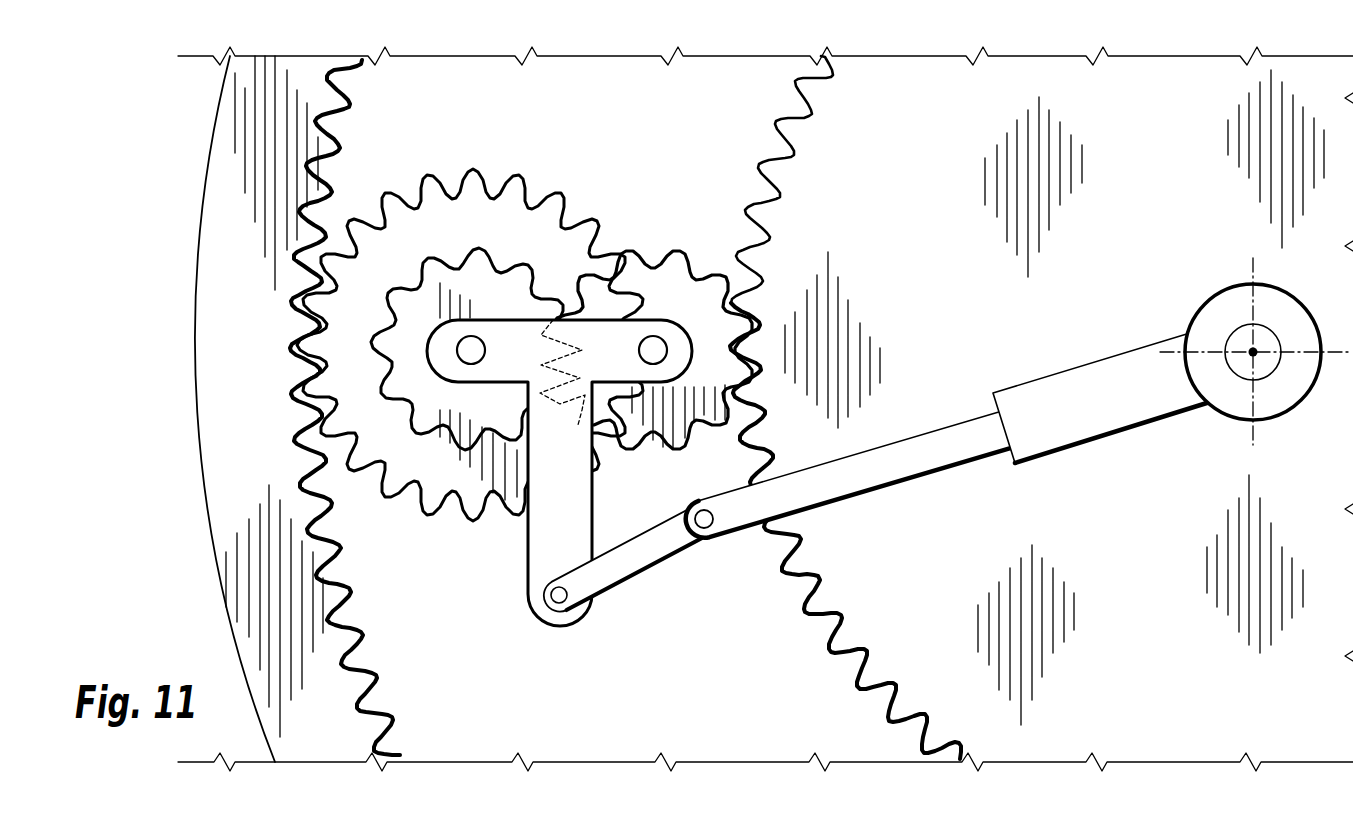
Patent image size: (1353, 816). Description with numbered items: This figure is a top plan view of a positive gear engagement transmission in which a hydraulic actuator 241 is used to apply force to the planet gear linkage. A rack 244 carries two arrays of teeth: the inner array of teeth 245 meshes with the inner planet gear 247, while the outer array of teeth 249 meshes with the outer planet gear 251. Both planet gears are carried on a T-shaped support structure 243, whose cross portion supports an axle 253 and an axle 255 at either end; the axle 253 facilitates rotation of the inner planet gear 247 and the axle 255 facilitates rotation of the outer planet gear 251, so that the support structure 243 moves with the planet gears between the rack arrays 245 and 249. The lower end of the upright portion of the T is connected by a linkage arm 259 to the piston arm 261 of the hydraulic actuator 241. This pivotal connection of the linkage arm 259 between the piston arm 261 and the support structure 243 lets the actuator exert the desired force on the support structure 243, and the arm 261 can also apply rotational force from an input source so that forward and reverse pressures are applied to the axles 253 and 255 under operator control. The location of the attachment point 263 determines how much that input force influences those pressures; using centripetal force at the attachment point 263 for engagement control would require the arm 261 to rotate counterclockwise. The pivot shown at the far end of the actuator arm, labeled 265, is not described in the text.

The hydraulic actuator 241 is at (1103, 393).
The support structure 243 is at (542, 540).
The rack 244 is at (715, 663).
The inner array of teeth 245 is at (797, 122).
The inner planet gear 247 is at (568, 243).
The outer array of teeth 249 is at (333, 142).
The outer planet gear 251 is at (437, 203).
The axle 253 is at (655, 347).
The axle 255 is at (475, 346).
The linkage arm 259 is at (643, 550).
The piston arm 261 is at (872, 477).
The attachment point 263 is at (553, 602).
The pivot shaft 265 is at (1253, 352).